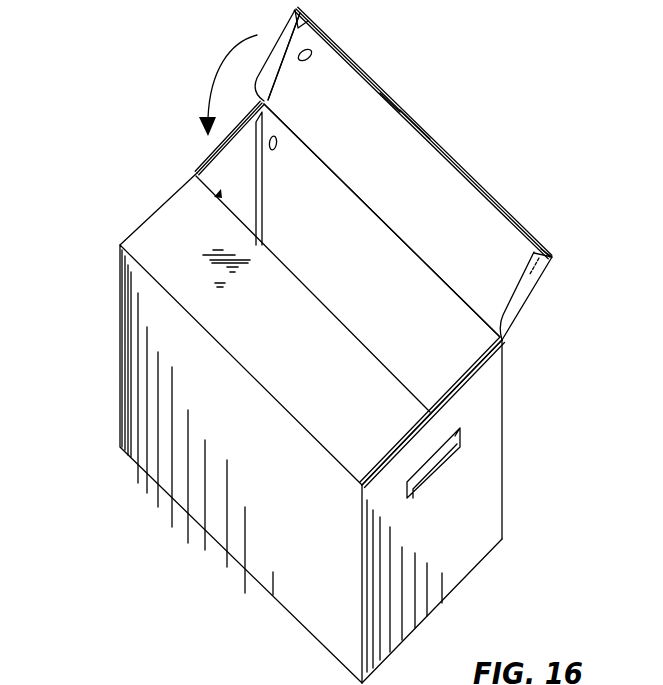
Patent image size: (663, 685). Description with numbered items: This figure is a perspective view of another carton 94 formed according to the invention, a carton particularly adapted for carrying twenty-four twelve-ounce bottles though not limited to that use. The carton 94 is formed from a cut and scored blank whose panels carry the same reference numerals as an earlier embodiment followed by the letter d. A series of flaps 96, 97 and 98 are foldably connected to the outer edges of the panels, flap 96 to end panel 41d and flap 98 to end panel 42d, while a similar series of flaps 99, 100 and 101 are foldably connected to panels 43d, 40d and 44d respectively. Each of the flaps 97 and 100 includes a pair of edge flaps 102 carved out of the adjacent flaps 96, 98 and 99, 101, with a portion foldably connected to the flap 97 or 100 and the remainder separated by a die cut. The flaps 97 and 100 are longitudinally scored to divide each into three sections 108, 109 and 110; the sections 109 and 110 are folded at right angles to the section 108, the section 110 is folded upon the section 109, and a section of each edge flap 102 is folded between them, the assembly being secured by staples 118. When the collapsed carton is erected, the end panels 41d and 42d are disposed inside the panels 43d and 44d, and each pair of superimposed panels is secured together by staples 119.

The panel 40d is at (263, 553).
The end panel 41d is at (234, 127).
The end panel 42d is at (478, 363).
The panel 43d is at (141, 224).
The panel 44d is at (462, 483).
The carton 94 is at (572, 269).
The flap 96 is at (237, 185).
The flap 97 is at (425, 163).
The flap 98 is at (477, 366).
The flap 99 is at (198, 179).
The flap 100 is at (333, 328).
The flap 101 is at (447, 379).
The edge flap 102 is at (287, 47).
The section 108 is at (415, 221).
The section 109 is at (412, 118).
The section 110 is at (398, 118).
The staples 118 is at (312, 23).
The staples 119 is at (493, 397).